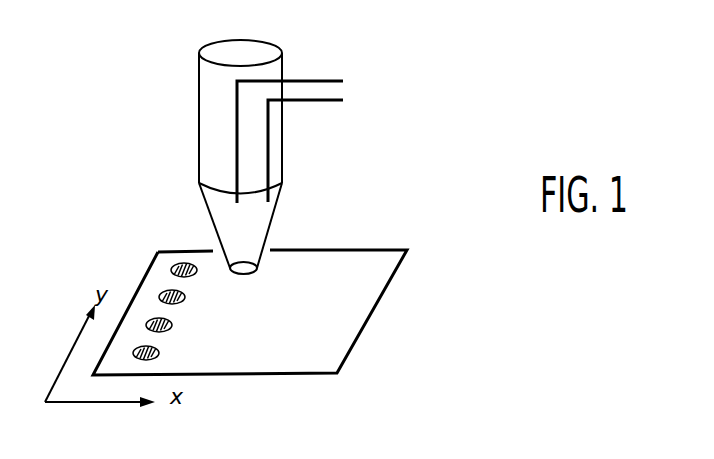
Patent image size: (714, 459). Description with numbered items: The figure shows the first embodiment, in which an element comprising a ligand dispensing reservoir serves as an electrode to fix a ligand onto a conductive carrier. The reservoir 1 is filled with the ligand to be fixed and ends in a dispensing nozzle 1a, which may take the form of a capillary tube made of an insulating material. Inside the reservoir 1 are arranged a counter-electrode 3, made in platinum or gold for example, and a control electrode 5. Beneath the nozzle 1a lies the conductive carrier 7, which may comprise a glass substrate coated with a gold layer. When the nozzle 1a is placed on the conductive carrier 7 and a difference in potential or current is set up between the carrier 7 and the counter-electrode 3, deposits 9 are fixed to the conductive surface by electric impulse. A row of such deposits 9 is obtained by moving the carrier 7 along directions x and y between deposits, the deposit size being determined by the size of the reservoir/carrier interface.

The reservoir 1 is at (200, 88).
The dispensing nozzle 1a is at (253, 274).
The counter-electrode 3 is at (322, 100).
The control electrode 5 is at (322, 81).
The conductive carrier 7 is at (358, 310).
The deposits 9 is at (153, 319).